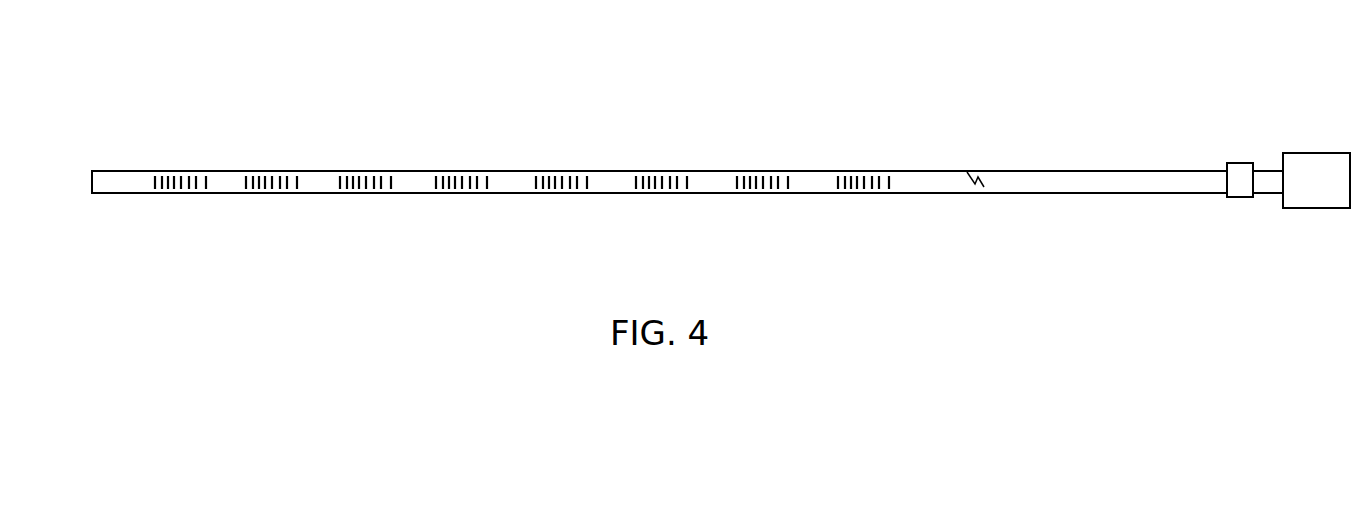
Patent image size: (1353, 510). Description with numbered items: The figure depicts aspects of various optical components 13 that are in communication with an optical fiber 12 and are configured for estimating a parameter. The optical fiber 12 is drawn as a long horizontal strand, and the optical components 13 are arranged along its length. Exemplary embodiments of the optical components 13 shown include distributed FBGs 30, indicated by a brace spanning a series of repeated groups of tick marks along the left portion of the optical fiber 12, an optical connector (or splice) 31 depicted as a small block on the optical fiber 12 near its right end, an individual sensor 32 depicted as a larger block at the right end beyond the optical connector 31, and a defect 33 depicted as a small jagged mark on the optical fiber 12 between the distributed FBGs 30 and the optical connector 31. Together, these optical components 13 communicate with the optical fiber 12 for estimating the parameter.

The optical fiber 12 is at (121, 170).
The optical components 13 is at (752, 170).
The distributed FBGs 30 is at (890, 153).
The optical connector 31 is at (1239, 198).
The individual sensor 32 is at (1338, 209).
The defect 33 is at (970, 174).